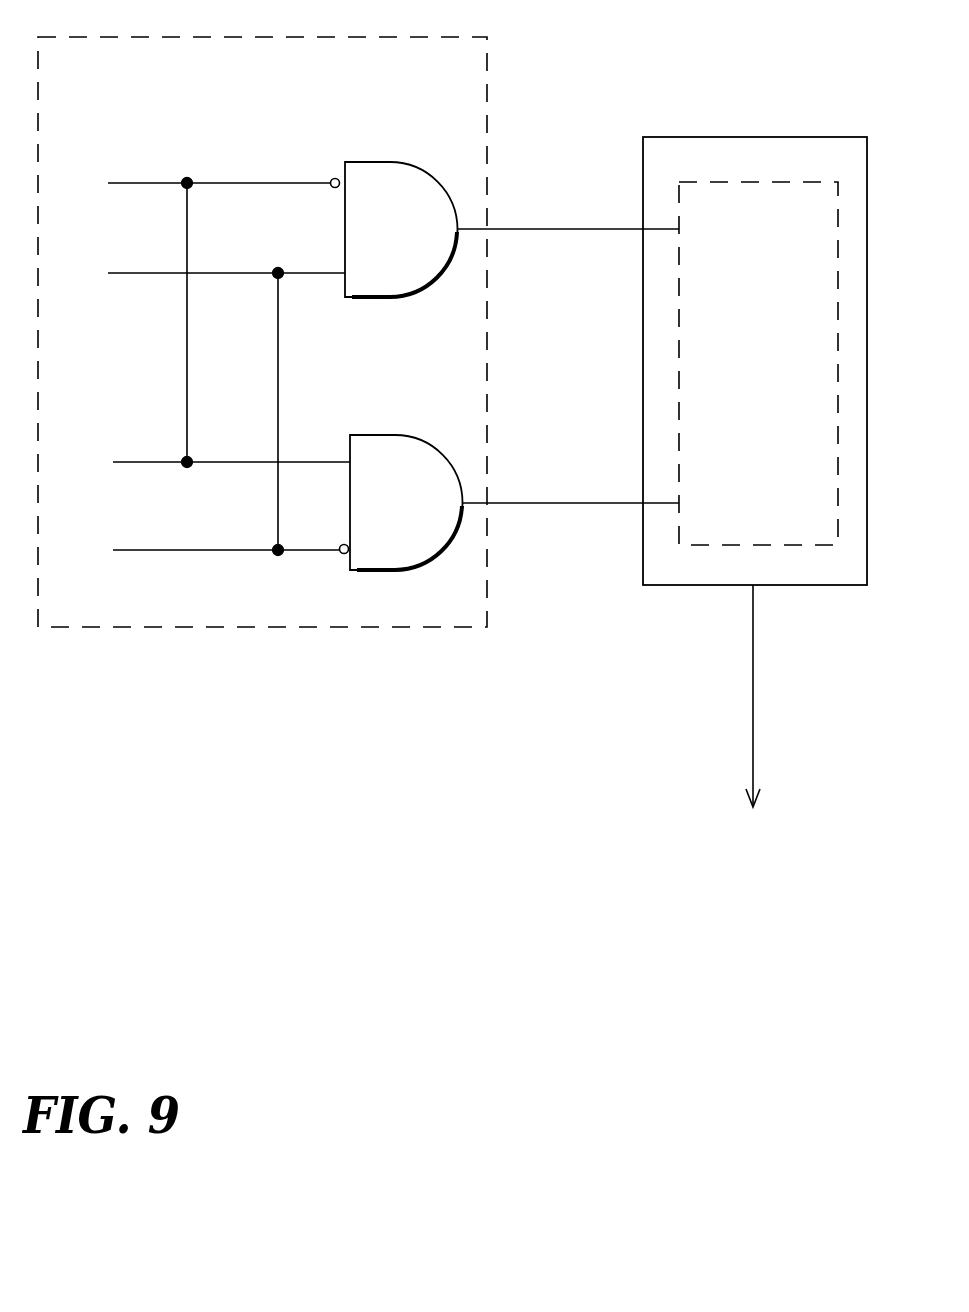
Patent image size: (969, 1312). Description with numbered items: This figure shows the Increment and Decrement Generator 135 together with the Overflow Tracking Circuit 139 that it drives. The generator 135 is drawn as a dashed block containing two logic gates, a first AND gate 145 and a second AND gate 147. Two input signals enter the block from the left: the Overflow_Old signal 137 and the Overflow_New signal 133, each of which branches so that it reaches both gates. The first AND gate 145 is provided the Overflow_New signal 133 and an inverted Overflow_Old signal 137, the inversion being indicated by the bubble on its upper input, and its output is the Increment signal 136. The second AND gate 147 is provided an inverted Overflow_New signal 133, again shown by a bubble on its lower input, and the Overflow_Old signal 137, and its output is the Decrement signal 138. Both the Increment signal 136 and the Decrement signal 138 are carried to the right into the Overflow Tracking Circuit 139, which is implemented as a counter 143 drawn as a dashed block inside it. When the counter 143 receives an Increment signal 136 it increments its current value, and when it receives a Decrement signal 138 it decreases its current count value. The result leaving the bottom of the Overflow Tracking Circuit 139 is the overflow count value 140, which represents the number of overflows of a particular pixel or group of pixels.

The Increment and Decrement Generator 135 is at (262, 332).
The Overflow_Old signal 137 is at (195, 318).
The Overflow_New signal 133 is at (192, 413).
The first AND gate 145 is at (394, 229).
The second AND gate 147 is at (401, 502).
The Increment signal 136 is at (569, 202).
The Decrement signal 138 is at (571, 477).
The Overflow Tracking Circuit 139 is at (755, 361).
The counter 143 is at (758, 363).
The overflow count value 140 is at (816, 696).